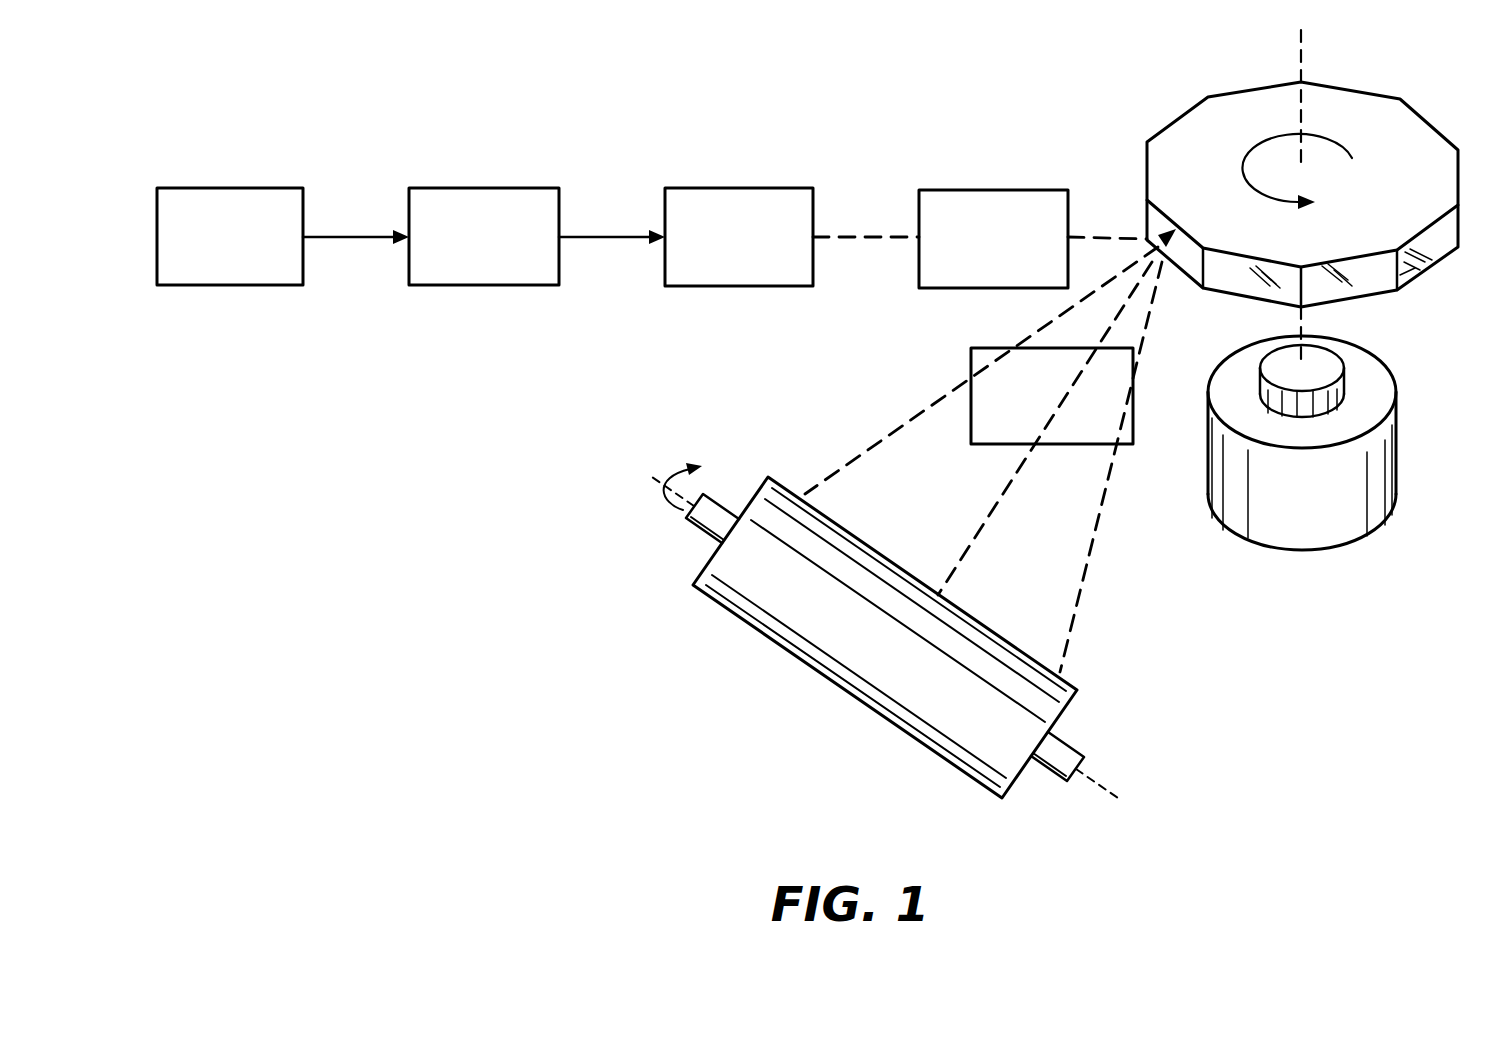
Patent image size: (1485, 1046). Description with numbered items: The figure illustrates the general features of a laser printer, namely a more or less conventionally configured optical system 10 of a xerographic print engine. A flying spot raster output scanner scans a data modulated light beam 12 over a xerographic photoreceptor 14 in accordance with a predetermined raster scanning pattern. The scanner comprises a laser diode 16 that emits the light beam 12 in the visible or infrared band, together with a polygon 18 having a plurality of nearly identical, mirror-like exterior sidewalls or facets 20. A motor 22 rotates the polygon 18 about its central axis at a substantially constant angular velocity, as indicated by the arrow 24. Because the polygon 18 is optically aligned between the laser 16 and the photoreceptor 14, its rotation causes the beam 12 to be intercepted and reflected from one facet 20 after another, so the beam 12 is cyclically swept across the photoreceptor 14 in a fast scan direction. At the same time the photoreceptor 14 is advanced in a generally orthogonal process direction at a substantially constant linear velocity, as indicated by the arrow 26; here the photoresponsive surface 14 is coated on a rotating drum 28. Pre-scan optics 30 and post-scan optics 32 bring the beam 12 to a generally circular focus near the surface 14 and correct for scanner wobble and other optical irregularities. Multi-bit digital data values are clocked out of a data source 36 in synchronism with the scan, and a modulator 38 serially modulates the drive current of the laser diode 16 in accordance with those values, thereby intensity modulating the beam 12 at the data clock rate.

The optical system 10 is at (586, 405).
The light beam 12 is at (850, 238).
The photoreceptor 14 is at (820, 670).
The laser diode 16 is at (710, 188).
The polygon 18 is at (1415, 122).
The facets 20 is at (1398, 284).
The motor 22 is at (1303, 546).
The arrow 24 is at (1323, 138).
The arrow 26 is at (667, 510).
The rotating drum 28 is at (1073, 712).
The pre-scan optics 30 is at (965, 190).
The post-scan optics 32 is at (1043, 447).
The data source 36 is at (252, 188).
The modulator 38 is at (482, 188).